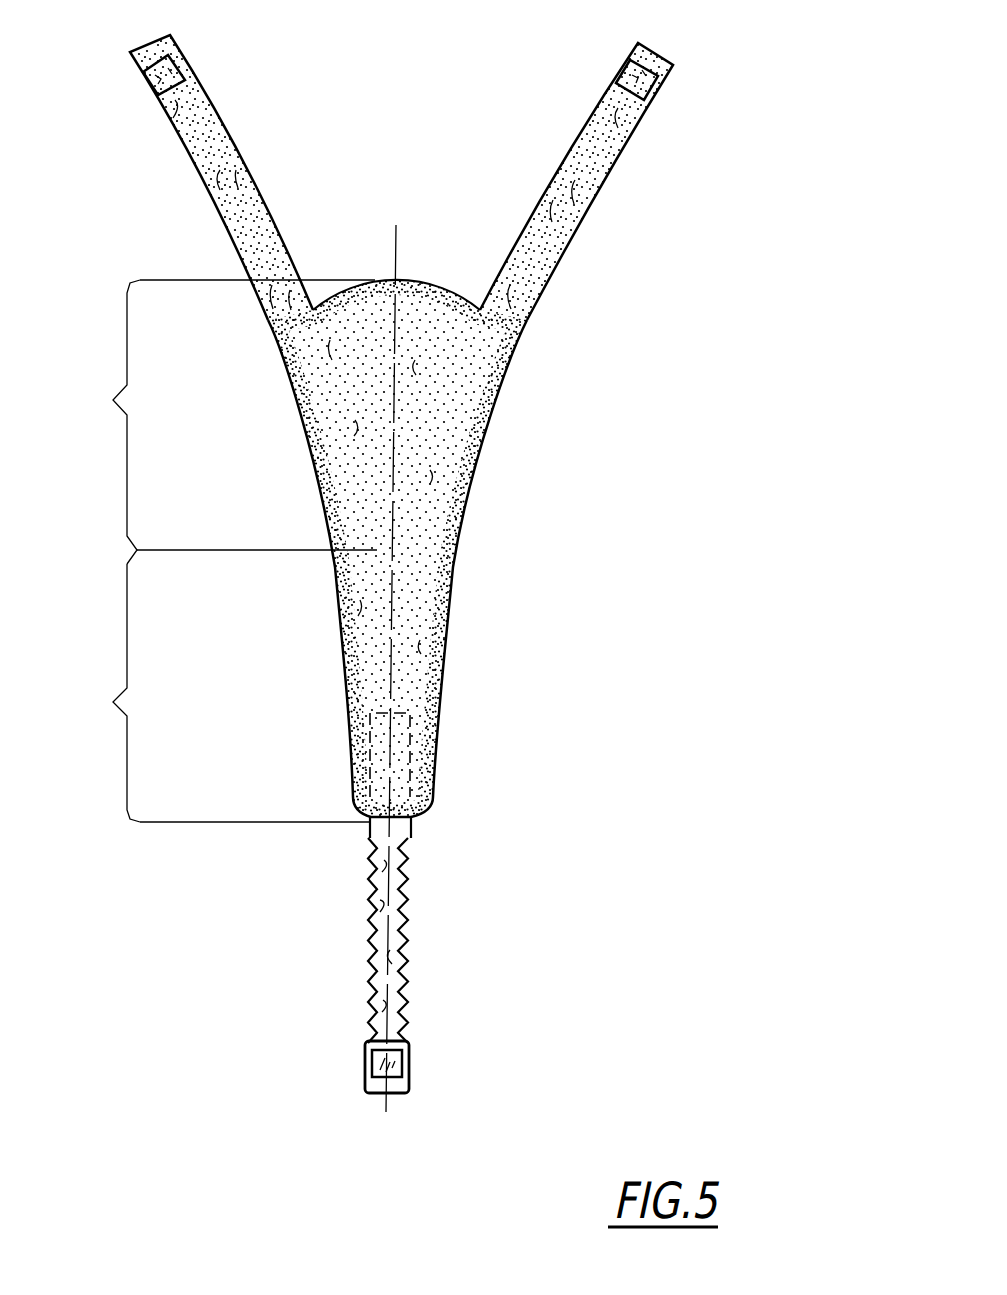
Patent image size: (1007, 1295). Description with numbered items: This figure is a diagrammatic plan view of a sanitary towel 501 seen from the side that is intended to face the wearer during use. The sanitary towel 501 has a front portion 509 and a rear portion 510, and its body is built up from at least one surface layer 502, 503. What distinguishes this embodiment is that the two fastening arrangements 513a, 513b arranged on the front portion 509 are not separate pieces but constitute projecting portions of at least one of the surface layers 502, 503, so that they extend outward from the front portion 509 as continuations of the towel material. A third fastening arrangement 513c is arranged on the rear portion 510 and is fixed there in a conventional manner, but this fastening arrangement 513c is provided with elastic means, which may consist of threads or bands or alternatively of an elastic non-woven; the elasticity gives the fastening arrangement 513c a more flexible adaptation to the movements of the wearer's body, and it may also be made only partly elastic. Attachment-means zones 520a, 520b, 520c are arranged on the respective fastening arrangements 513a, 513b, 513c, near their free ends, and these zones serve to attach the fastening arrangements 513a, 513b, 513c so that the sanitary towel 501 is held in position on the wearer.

The sanitary towel 501 is at (750, 43).
The surface layer 502 is at (457, 422).
The surface layer 503 is at (442, 533).
The front portion 509 is at (108, 398).
The rear portion 510 is at (108, 701).
The fastening arrangement 513a is at (624, 178).
The fastening arrangement 513b is at (170, 147).
The fastening arrangement 513c is at (425, 940).
The attachment-means zone 520a is at (655, 88).
The attachment-means zone 520b is at (150, 83).
The attachment-means zone 520c is at (408, 1063).